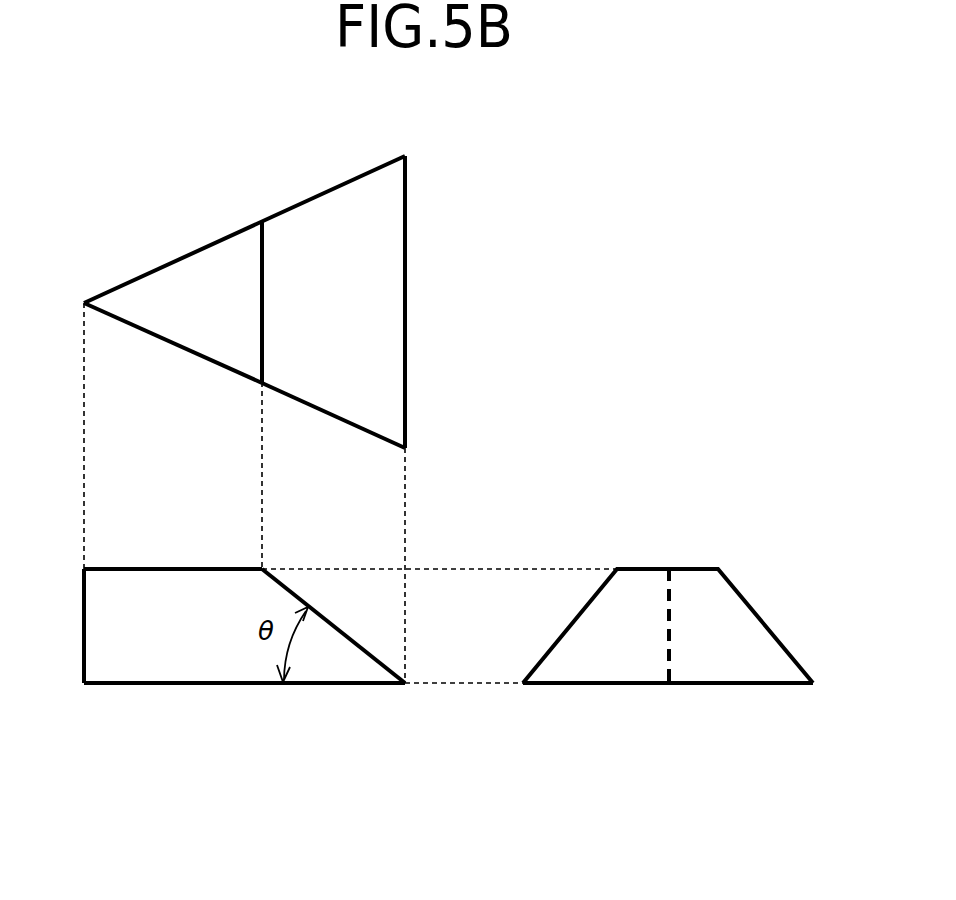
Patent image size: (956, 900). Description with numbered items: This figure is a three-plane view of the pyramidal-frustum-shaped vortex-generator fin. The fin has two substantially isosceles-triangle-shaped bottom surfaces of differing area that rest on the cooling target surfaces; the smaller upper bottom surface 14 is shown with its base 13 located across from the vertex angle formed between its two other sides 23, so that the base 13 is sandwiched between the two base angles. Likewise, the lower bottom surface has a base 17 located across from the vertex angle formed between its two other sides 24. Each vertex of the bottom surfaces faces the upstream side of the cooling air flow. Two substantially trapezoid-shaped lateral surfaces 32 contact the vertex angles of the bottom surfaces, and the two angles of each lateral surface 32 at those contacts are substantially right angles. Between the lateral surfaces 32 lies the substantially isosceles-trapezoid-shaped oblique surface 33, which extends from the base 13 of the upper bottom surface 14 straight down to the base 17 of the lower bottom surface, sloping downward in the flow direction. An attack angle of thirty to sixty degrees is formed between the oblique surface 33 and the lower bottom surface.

The base 13 is at (262, 270).
The upper bottom surface 14 is at (181, 272).
The base 17 is at (407, 255).
The sides 23 is at (188, 568).
The sides 24 is at (300, 685).
The lateral surfaces 32 is at (152, 648).
The oblique surface 33 is at (375, 336).